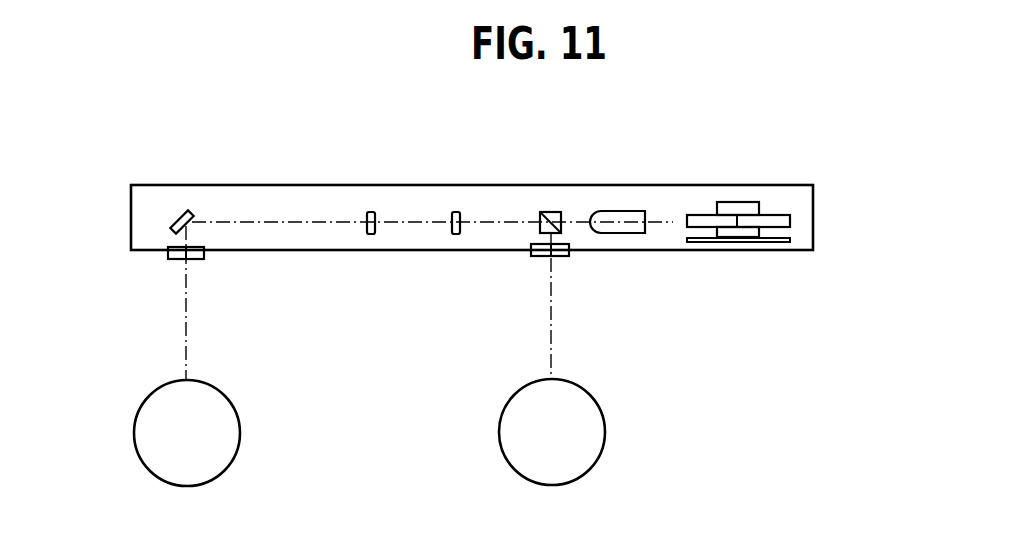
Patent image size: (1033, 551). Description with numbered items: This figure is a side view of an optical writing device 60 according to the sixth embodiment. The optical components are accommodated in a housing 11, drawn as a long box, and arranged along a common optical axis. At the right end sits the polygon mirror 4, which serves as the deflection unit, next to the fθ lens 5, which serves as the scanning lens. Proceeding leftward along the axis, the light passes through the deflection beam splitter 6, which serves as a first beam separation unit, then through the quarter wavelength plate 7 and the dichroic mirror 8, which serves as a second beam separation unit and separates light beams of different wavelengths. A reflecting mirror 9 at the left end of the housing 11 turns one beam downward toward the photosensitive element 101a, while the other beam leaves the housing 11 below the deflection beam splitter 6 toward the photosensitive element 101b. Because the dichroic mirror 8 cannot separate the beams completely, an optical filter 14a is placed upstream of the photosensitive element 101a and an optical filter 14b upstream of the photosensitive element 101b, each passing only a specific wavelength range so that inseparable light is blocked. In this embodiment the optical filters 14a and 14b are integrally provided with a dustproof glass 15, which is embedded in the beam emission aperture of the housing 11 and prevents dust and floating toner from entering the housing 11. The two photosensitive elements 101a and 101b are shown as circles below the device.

The optical writing device 60 is at (273, 141).
The reflecting mirror 9 is at (184, 211).
The dichroic mirror 8 is at (370, 211).
The 1/4 wavelength plate 7 is at (456, 211).
The deflection beam splitter 6 is at (551, 211).
The fθ lens 5 is at (623, 210).
The housing 11 is at (688, 185).
The polygon mirror 4 is at (782, 215).
The optical filter 14a is at (199, 260).
The optical filter 14b is at (566, 257).
The dustproof glass 15 is at (168, 248).
The photosensitive element 101a is at (237, 410).
The photosensitive element 101b is at (602, 407).